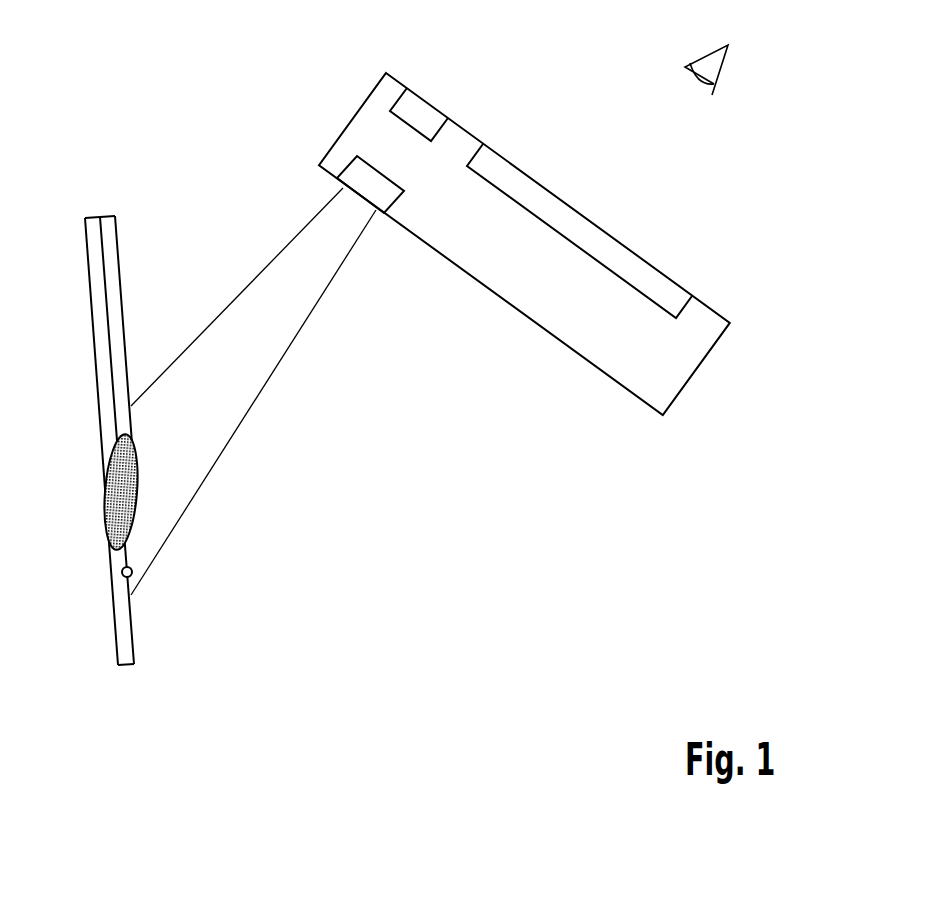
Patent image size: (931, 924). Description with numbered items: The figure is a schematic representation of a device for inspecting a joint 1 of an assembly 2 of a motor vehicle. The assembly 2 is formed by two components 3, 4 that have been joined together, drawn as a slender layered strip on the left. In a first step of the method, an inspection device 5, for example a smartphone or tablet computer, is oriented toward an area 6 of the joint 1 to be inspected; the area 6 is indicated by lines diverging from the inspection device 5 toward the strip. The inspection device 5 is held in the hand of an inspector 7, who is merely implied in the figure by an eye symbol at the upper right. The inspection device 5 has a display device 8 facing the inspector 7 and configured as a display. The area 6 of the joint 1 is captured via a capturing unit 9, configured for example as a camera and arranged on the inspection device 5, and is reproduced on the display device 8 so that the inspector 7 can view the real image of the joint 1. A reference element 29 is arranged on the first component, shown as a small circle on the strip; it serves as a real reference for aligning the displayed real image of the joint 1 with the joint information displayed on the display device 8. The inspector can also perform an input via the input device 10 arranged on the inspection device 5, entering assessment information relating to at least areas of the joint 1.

The joint 1 is at (120, 497).
The assembly 2 is at (103, 385).
The component 3 is at (110, 253).
The component 4 is at (100, 290).
The inspection device 5 is at (672, 385).
The area 6 is at (164, 508).
The inspector 7 is at (724, 62).
The display device 8 is at (518, 185).
The capturing unit 9 is at (374, 181).
The input device 10 is at (417, 113).
The reference element 29 is at (121, 574).